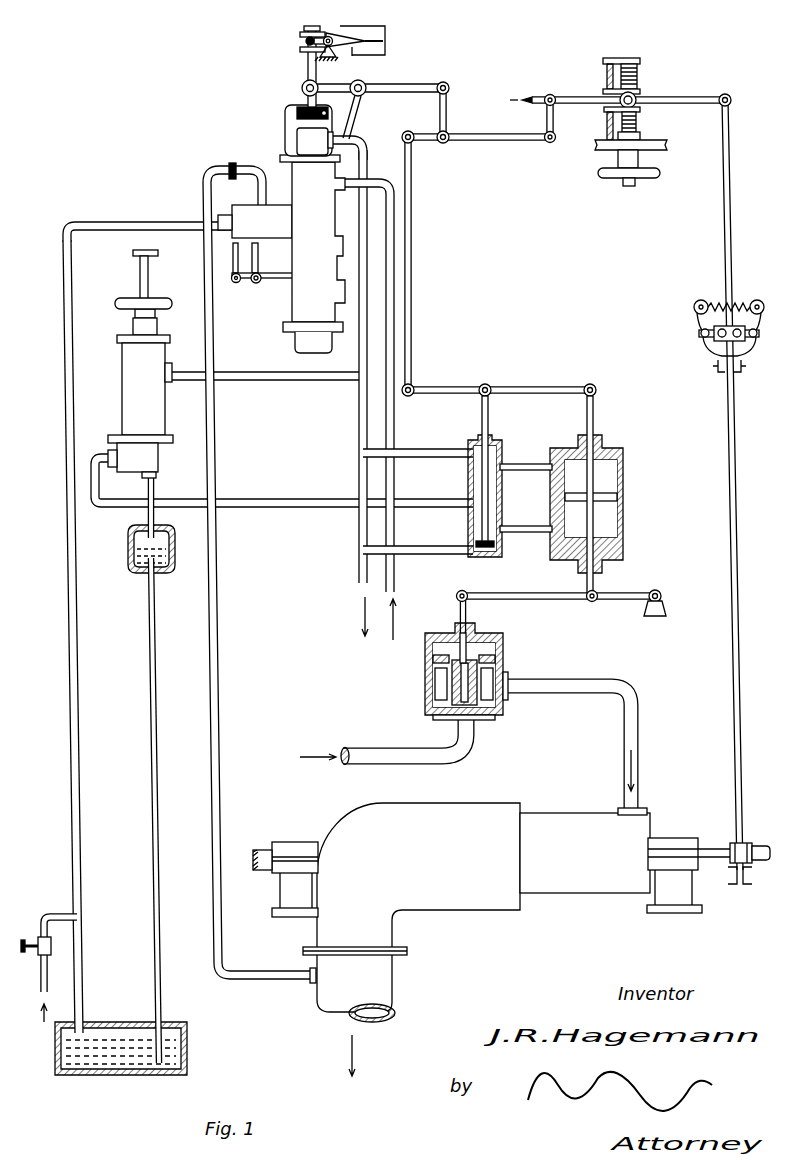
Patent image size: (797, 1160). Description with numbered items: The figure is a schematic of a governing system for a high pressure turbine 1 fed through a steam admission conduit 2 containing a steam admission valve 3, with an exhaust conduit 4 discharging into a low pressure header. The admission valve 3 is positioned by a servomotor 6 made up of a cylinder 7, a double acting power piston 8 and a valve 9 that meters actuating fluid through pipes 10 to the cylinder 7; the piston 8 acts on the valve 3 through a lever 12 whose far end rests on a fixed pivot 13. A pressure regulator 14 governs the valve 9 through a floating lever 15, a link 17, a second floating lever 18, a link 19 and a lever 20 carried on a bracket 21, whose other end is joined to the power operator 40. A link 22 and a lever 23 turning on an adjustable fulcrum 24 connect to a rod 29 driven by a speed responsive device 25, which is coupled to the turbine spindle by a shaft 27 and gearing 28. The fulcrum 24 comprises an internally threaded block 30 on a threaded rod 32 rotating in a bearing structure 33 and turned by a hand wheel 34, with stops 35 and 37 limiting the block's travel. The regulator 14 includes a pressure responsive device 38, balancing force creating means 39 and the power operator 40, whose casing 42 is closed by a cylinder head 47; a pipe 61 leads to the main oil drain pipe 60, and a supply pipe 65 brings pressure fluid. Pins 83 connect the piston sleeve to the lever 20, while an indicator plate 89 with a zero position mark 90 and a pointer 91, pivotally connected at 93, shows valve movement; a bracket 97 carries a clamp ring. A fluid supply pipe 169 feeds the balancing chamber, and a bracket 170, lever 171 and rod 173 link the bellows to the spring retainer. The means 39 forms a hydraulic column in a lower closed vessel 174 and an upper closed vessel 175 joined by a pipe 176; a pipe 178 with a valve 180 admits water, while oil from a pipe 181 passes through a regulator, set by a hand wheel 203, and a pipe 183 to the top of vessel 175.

The high pressure turbine 1 is at (475, 937).
The steam admission conduit 2 is at (580, 686).
The steam admission valve 3 is at (425, 680).
The exhaust conduit 4 is at (395, 997).
The servomotor 6 is at (601, 495).
The cylinder 7 is at (626, 532).
The double acting power piston 8 is at (607, 498).
The valve 9 is at (500, 455).
The pipes 10 is at (526, 530).
The lever 12 is at (538, 598).
The fixed pivot 13 is at (658, 600).
The pressure regulator 14 is at (262, 321).
The floating lever 15 is at (461, 392).
The link 17 is at (411, 282).
The floating lever 18 is at (473, 140).
The link 19 is at (446, 110).
The lever 20 is at (410, 90).
The bracket 21 is at (353, 123).
The link 22 is at (547, 118).
The lever 23 is at (571, 102).
The adjustable fulcrum 24 is at (623, 130).
The speed responsive device 25 is at (688, 341).
The shaft 27 is at (736, 500).
The gearing 28 is at (776, 839).
The rod 29 is at (733, 195).
The internally threaded block 30 is at (638, 108).
The externally threaded rod 32 is at (638, 128).
The bearing structure 33 is at (605, 150).
The hand wheel 34 is at (652, 178).
The stop 35 is at (607, 82).
The stop 37 is at (607, 132).
The pressure responsive device 38 is at (228, 200).
The balancing force creating means 39 is at (190, 411).
The power operator 40 is at (303, 250).
The casing 42 is at (295, 174).
The cylinder head 47 is at (296, 141).
The main oil drain pipe 60 is at (360, 490).
The pipe 61 is at (365, 152).
The supply pipe 65 is at (373, 186).
The pins 83 is at (302, 90).
The indicator plate 89 is at (366, 60).
The zero position mark 90 is at (385, 36).
The pointer 91 is at (357, 33).
The pivotal connection means 93 is at (305, 43).
The bracket 97 is at (286, 113).
The fluid supply pipe 169 is at (94, 226).
The bracket 170 is at (236, 281).
The lever 171 is at (268, 280).
The rod 173 is at (256, 263).
The lower closed vessel 174 is at (187, 1050).
The upper closed vessel 175 is at (170, 574).
The pipe 176 is at (158, 864).
The pipe 178 is at (79, 963).
The valve 180 is at (40, 943).
The pipe 181 is at (280, 505).
The pipe 183 is at (154, 487).
The hand wheel 203 is at (131, 304).